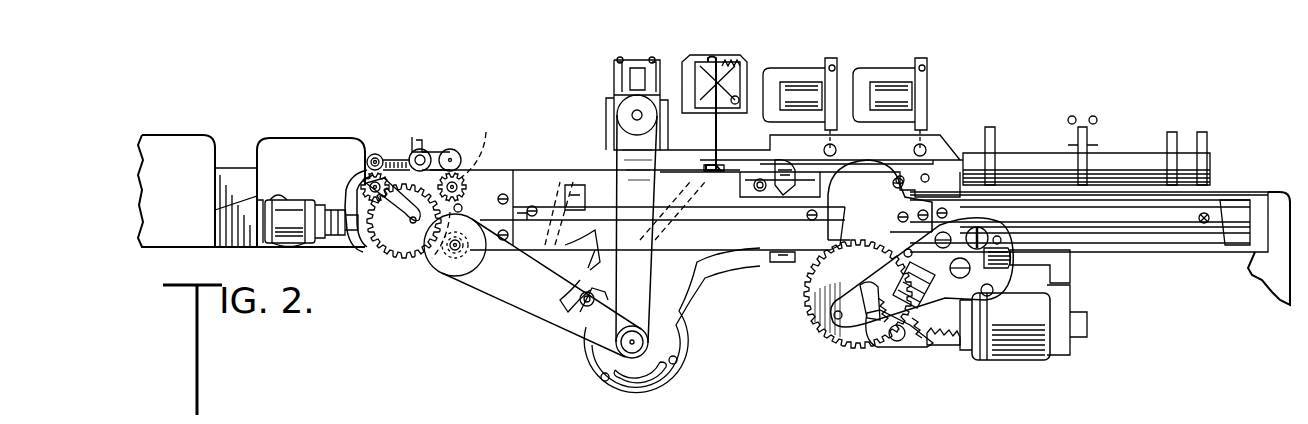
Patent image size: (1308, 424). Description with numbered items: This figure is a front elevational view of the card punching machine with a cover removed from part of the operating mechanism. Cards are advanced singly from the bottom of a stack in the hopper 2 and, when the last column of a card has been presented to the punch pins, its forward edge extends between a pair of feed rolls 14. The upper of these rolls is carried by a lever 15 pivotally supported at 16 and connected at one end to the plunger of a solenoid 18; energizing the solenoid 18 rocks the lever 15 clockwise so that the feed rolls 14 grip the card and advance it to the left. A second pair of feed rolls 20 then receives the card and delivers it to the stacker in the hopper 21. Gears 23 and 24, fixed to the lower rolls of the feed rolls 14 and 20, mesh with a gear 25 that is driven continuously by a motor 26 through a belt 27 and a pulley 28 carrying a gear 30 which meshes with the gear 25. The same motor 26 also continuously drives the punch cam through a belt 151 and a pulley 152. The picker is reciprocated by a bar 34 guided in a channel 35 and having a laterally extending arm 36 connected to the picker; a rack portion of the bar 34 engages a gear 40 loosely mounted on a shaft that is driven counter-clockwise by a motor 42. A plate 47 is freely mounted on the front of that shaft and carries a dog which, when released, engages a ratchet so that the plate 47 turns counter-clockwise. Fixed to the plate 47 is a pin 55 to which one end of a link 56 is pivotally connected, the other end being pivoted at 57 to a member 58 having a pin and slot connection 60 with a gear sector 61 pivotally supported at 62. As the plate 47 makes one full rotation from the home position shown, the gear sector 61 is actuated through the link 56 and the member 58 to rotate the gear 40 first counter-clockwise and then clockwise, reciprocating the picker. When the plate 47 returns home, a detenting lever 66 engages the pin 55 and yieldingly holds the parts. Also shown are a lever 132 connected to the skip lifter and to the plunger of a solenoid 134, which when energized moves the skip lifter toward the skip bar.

The hopper 2 is at (1230, 190).
The feed rolls 14 is at (459, 157).
The lever 15 is at (398, 152).
The pivot 16 is at (382, 152).
The solenoid 18 is at (302, 205).
The feed rolls 20 is at (375, 153).
The hopper 21 is at (272, 145).
The gear 23 is at (466, 192).
The gear 24 is at (362, 183).
The gear 25 is at (392, 256).
The motor 26 is at (600, 350).
The belt 27 is at (542, 318).
The pulley 28 is at (436, 256).
The gear 30 is at (465, 253).
The bar 34 is at (1185, 243).
The channel 35 is at (1128, 245).
The arm 36 is at (1252, 210).
The gear 40 is at (810, 300).
The motor 42 is at (1035, 365).
The plate 47 is at (840, 289).
The pin 55 is at (834, 316).
The link 56 is at (885, 305).
The pivot 57 is at (904, 252).
The member 58 is at (980, 228).
The pin and slot connection 60 is at (1003, 244).
The gear sector 61 is at (954, 346).
The pivot 62 is at (964, 266).
The detenting lever 66 is at (880, 342).
The lever 132 is at (707, 165).
The solenoid 134 is at (720, 58).
The belt 151 is at (615, 168).
The pulley 152 is at (622, 110).